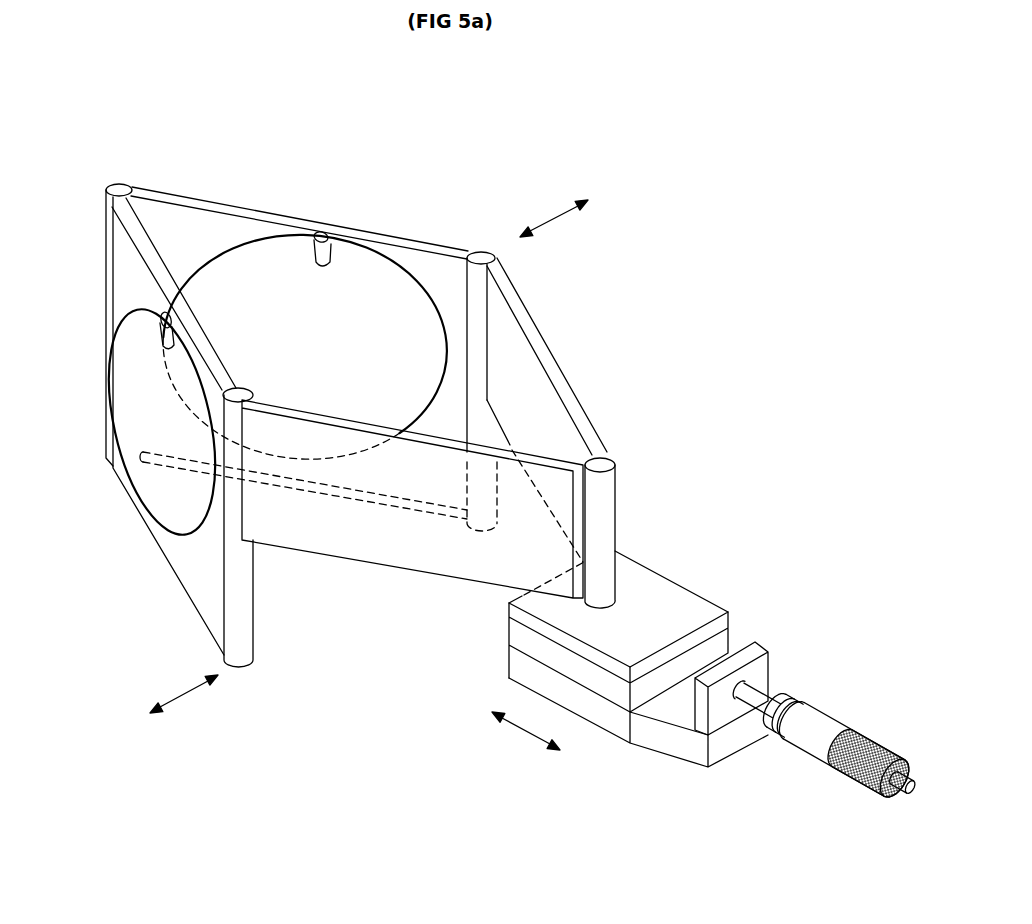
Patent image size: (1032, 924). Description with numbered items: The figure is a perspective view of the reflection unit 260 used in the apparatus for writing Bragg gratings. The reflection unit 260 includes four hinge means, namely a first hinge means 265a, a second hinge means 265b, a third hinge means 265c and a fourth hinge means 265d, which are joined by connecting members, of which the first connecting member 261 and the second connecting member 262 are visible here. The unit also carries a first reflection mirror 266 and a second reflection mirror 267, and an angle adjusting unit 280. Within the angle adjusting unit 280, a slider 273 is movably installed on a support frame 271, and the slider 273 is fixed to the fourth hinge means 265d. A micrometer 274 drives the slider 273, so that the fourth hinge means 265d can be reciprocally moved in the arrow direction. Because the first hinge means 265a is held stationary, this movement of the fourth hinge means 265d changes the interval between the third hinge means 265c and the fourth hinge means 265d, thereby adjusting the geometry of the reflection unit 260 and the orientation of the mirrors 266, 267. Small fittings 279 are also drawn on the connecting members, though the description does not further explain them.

The reflection unit 260 is at (312, 193).
The first connecting member 261 is at (130, 277).
The second connecting member 262 is at (200, 200).
The first hinge means 265a is at (122, 186).
The second hinge means 265b is at (618, 458).
The third hinge means 265c is at (255, 386).
The fourth hinge means 265d is at (495, 254).
The first reflection mirror 266 is at (178, 508).
The second reflection mirror 267 is at (381, 286).
The connecting clip 279 is at (313, 246).
The support frame 271 is at (658, 740).
The slider 273 is at (688, 607).
The micrometer 274 is at (808, 745).
The angle adjusting unit 280 is at (812, 590).